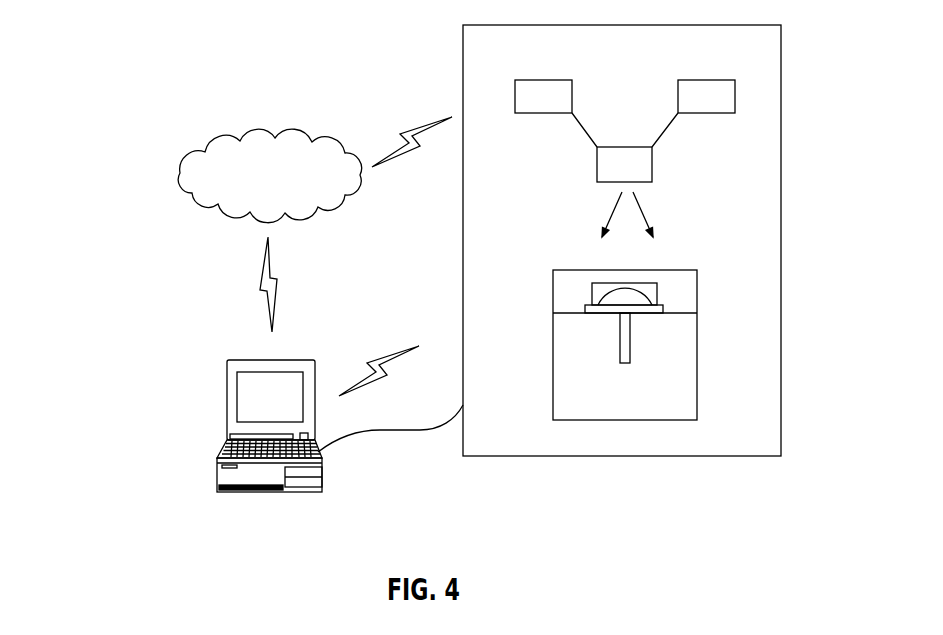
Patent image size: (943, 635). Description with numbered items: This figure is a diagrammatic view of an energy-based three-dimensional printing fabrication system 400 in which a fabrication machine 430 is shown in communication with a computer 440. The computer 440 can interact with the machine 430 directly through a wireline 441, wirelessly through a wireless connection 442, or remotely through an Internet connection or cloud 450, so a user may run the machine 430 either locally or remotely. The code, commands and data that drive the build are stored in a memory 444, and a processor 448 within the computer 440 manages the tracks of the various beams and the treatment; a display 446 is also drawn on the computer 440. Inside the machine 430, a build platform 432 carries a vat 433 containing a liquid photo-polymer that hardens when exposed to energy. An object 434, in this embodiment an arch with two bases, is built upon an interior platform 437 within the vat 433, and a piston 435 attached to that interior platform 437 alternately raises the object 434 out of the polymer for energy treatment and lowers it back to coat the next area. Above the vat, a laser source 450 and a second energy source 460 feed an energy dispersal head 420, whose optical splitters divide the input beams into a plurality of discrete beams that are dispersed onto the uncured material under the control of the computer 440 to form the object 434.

The fabrication system 400 is at (186, 78).
The cloud 450 is at (180, 174).
The second energy source 460 is at (705, 80).
The energy dispersal head 420 is at (652, 168).
The fabrication machine 430 is at (725, 25).
The build platform 432 is at (697, 367).
The vat 433 is at (697, 300).
The object 434 is at (660, 295).
The piston 435 is at (620, 346).
The interior platform 437 is at (591, 298).
The computer 440 is at (270, 413).
The wireline 441 is at (382, 424).
The wireless connection 442 is at (380, 380).
The memory 444 is at (322, 472).
The display 446 is at (290, 372).
The processor 448 is at (322, 486).